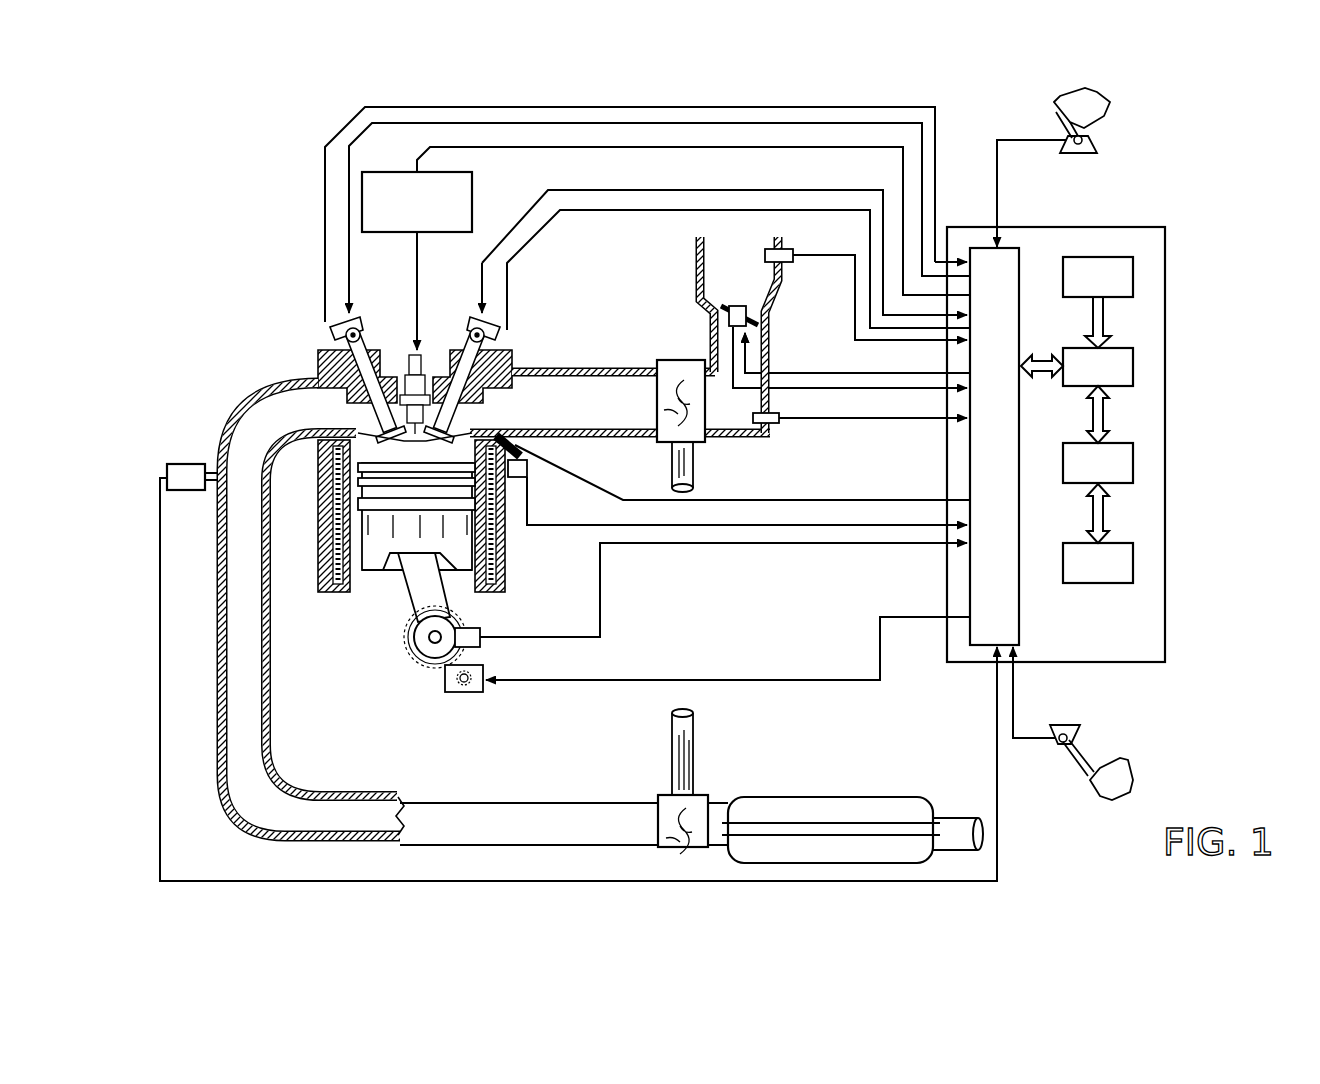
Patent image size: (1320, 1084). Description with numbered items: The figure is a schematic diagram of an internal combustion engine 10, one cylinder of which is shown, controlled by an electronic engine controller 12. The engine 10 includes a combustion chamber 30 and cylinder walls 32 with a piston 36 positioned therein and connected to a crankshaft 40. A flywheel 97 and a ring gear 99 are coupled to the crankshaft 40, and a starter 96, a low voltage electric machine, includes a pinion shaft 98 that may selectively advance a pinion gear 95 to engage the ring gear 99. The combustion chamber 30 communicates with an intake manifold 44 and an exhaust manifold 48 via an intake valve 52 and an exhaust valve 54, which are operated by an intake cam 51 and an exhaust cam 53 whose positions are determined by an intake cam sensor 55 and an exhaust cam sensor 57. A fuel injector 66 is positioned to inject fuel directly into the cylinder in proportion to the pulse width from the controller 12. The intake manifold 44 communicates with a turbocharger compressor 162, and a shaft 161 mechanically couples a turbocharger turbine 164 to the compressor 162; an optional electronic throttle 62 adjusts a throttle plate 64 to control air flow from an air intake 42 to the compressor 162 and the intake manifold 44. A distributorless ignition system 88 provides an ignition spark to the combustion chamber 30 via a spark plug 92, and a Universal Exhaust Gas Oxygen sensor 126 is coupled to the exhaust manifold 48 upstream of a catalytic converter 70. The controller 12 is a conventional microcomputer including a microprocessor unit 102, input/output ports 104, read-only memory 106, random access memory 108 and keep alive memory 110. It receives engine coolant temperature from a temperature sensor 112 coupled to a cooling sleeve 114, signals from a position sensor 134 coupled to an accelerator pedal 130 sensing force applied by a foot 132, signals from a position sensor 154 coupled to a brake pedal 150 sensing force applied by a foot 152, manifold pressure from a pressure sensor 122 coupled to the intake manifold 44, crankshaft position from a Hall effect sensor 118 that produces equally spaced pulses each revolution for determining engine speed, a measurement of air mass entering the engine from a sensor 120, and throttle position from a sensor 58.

The internal combustion engine 10 is at (256, 306).
The electronic engine controller 12 is at (1165, 228).
The combustion chamber 30 is at (345, 545).
The cylinder walls 32 is at (358, 590).
The piston 36 is at (400, 548).
The crankshaft 40 is at (422, 662).
The air intake 42 is at (739, 335).
The intake manifold 44 is at (620, 402).
The exhaust manifold 48 is at (313, 609).
The intake cam 51 is at (472, 325).
The intake valve 52 is at (470, 412).
The exhaust cam 53 is at (358, 325).
The exhaust valve 54 is at (372, 422).
The intake cam sensor 55 is at (497, 335).
The exhaust cam sensor 57 is at (333, 333).
The throttle position sensor 58 is at (732, 336).
The electronic throttle 62 is at (759, 317).
The throttle plate 64 is at (728, 313).
The fuel injector 66 is at (530, 468).
The catalytic converter 70 is at (770, 797).
The distributorless ignition system 88 is at (375, 172).
The spark plug 92 is at (420, 347).
The pinion gear 95 is at (468, 692).
The starter 96 is at (480, 692).
The flywheel 97 is at (412, 640).
The pinion shaft 98 is at (462, 688).
The ring gear 99 is at (440, 668).
The microprocessor unit 102 is at (1133, 372).
The input/output ports 104 is at (1020, 262).
The read-only memory 106 is at (1133, 276).
The random access memory 108 is at (1133, 468).
The keep alive memory 110 is at (1133, 567).
The temperature sensor 112 is at (525, 480).
The cooling sleeve 114 is at (492, 545).
The Hall effect sensor 118 is at (480, 630).
The air mass sensor 120 is at (786, 249).
The pressure sensor 122 is at (776, 426).
The Universal Exhaust Gas Oxygen (UEGO) sensor 126 is at (167, 470).
The accelerator pedal 130 is at (1058, 113).
The foot 132 is at (1110, 108).
The position sensor 134 is at (1098, 142).
The brake pedal 150 is at (1086, 778).
The foot 152 is at (1118, 756).
The position sensor 154 is at (1058, 736).
The shaft 161 is at (670, 455).
The turbocharger compressor 162 is at (655, 362).
The turbocharger turbine 164 is at (660, 795).